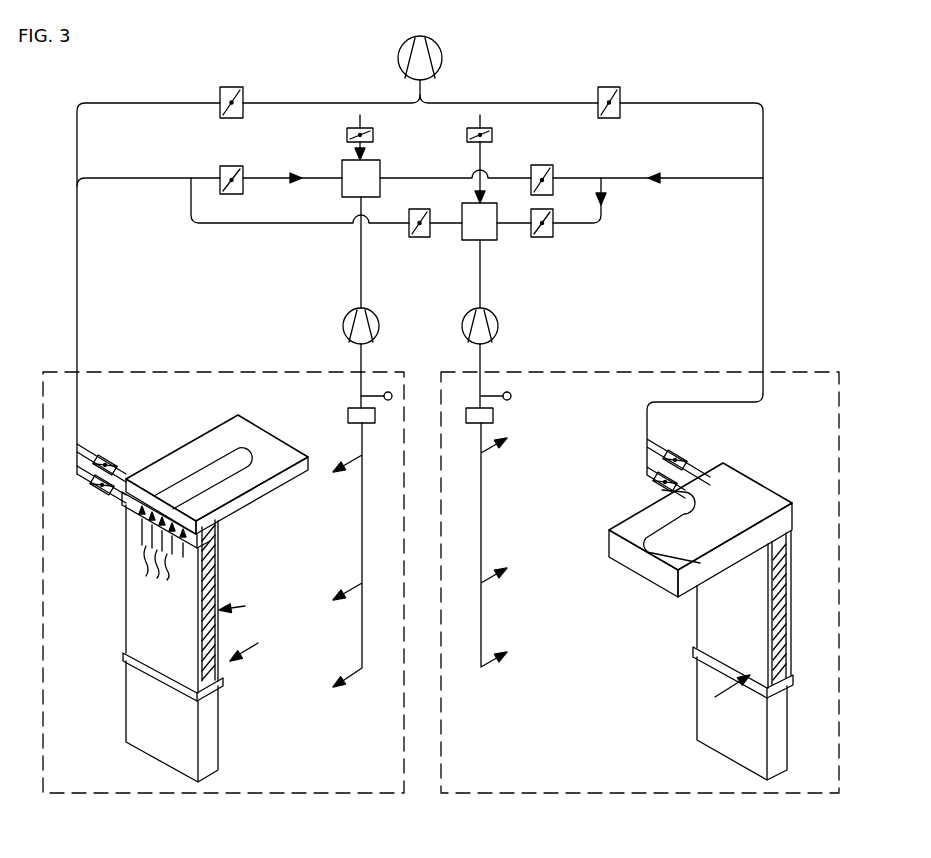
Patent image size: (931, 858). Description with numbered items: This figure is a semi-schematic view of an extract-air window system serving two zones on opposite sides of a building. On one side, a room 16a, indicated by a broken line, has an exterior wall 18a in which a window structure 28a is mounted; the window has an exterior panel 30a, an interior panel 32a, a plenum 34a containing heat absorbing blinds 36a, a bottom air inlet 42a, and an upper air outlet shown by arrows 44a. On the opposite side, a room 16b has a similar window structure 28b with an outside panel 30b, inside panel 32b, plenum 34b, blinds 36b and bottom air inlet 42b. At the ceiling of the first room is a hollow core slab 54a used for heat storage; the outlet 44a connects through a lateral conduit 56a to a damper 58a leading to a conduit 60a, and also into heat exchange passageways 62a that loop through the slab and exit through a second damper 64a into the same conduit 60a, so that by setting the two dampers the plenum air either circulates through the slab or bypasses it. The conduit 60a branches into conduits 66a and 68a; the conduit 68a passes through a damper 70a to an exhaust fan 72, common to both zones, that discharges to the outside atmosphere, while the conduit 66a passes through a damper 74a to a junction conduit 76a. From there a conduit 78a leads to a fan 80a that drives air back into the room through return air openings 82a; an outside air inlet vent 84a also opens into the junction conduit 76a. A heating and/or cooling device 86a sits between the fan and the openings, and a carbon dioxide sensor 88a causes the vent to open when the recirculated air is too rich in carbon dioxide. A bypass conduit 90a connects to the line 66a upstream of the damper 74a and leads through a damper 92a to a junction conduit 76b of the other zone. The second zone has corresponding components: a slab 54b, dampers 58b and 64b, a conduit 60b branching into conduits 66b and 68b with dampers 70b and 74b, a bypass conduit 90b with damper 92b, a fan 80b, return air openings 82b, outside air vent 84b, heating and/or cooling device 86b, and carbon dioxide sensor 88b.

The room 16a is at (173, 372).
The room 16b is at (610, 372).
The exterior wall 18a is at (212, 746).
The window structure 28a is at (245, 606).
The window structure 28b is at (700, 625).
The exterior panel 30a is at (130, 620).
The outside panel 30b is at (790, 570).
The interior panel 32a is at (218, 578).
The inside panel 32b is at (712, 632).
The plenum 34a is at (220, 636).
The plenum 34b is at (780, 603).
The heat absorbing blinds 36a is at (216, 568).
The heat absorbing blinds 36b is at (780, 630).
The bottom air inlet 42a is at (217, 675).
The bottom air inlet 42b is at (760, 682).
The upper air outlet 44a is at (162, 550).
The hollow core slab 54a is at (232, 425).
The hollow core slab 54b is at (735, 476).
The lateral conduit 56a is at (122, 500).
The damper 58a is at (100, 490).
The damper 58b is at (655, 485).
The conduit 60a is at (78, 300).
The conduit 60b is at (762, 300).
The heat exchange passageways 62a is at (222, 481).
The second damper 64a is at (108, 460).
The second damper 64b is at (686, 456).
The conduit 66a is at (168, 178).
The conduit 66b is at (620, 178).
The conduit 68a is at (181, 103).
The conduit 68b is at (662, 103).
The damper 70a is at (232, 88).
The damper 70b is at (600, 90).
The exhaust fan 72 is at (398, 60).
The damper 74a is at (232, 166).
The damper 74b is at (553, 170).
The junction conduit 76a is at (350, 196).
The junction conduit 76b is at (490, 240).
The conduit 78a is at (361, 272).
The fan 80a is at (345, 328).
The fan 80b is at (498, 320).
The return air openings 82a is at (357, 455).
The return air openings 82b is at (485, 453).
The outside air inlet vent 84a is at (375, 138).
The outside air inlet vent 84b is at (493, 137).
The heating and/or cooling device 86a is at (348, 415).
The heating and/or cooling device 86b is at (493, 415).
The carbon dioxide sensor 88a is at (388, 392).
The carbon dioxide sensor 88b is at (507, 392).
The bypass conduit 90a is at (250, 225).
The bypass conduit 90b is at (598, 226).
The damper 92a is at (415, 237).
The damper 92b is at (553, 232).